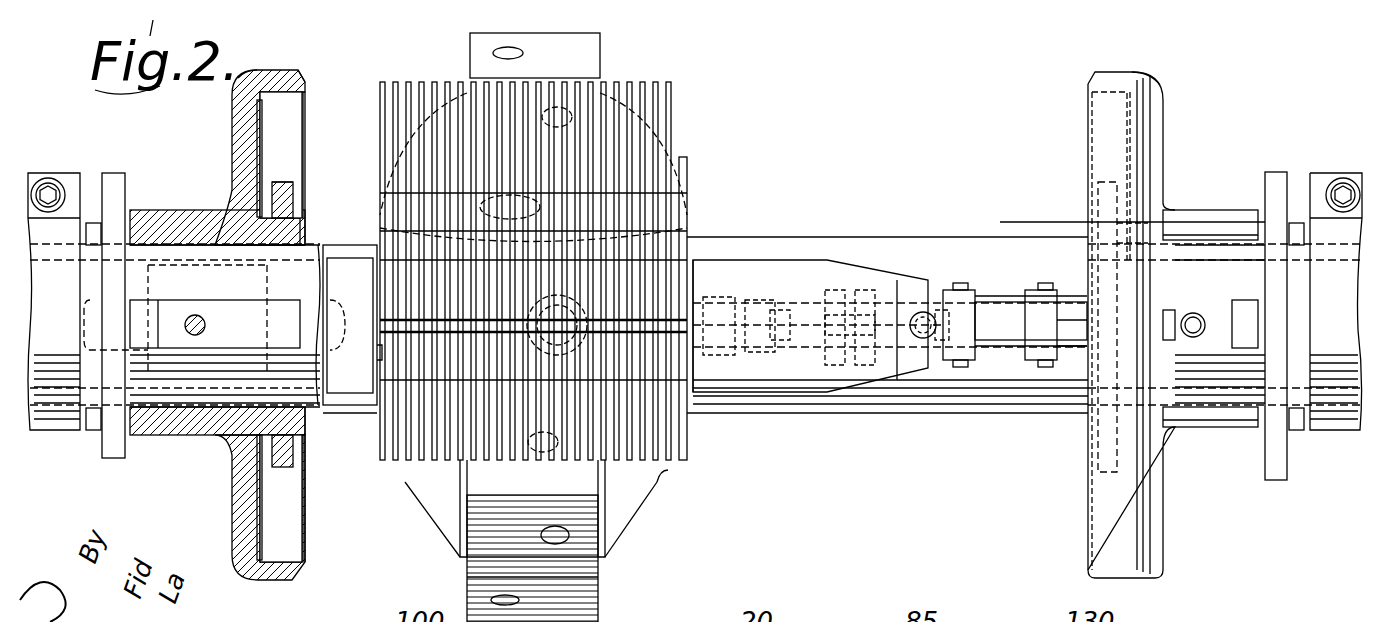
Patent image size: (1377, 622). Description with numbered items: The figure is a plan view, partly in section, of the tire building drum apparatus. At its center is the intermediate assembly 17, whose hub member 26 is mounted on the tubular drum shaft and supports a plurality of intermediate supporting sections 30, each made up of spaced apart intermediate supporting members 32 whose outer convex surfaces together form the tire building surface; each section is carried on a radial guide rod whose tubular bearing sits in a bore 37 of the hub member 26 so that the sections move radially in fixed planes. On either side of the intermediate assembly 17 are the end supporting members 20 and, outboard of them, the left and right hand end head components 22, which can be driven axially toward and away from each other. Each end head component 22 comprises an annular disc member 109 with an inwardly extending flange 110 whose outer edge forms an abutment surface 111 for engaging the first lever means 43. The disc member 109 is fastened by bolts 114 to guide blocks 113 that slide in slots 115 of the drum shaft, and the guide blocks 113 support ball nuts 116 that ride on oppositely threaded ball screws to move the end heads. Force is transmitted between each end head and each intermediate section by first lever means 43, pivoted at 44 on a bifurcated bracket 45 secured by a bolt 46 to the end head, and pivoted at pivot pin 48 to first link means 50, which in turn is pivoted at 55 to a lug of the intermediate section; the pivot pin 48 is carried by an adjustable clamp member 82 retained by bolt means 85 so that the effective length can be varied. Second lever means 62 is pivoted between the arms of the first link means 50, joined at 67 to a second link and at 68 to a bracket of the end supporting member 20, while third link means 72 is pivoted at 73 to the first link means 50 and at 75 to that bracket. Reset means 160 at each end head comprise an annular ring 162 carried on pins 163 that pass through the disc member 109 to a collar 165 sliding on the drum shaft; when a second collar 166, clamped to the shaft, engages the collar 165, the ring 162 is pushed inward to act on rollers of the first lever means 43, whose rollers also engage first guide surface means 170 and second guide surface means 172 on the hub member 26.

The intermediate assembly 17 is at (455, 576).
The end supporting member 20 is at (349, 379).
The end head component 22 is at (250, 580).
The hub member 26 is at (585, 573).
The intermediate supporting section 30 is at (377, 366).
The intermediate supporting member 32 is at (408, 82).
The bore 37 is at (505, 595).
The first lever means 43 is at (1005, 318).
The pivot 44 is at (1046, 283).
The bifurcated bracket 45 is at (1075, 348).
The bolt 46 is at (1170, 308).
The pivot pin 48 is at (958, 283).
The first link means 50 is at (986, 298).
The pivot 55 is at (696, 262).
The second lever means 62 is at (756, 356).
The pivot 67 is at (722, 356).
The pivot 68 is at (782, 300).
The third link means 72 is at (850, 366).
The pivot 73 is at (842, 290).
The pivot 75 is at (872, 290).
The clamp member 82 is at (940, 356).
The bolt means 85 is at (925, 312).
The annular disc member 109 is at (262, 130).
The flange 110 is at (270, 72).
The abutment surface 111 is at (306, 82).
The guide block 113 is at (190, 296).
The bolt 114 is at (206, 327).
The slot 115 is at (300, 302).
The ball nut 116 is at (283, 233).
The reset means 160 is at (298, 186).
The annular ring 162 is at (293, 197).
The pin 163 is at (180, 230).
The collar 165 is at (113, 178).
The second collar 166 is at (55, 173).
The first guide surface means 170 is at (660, 450).
The second guide surface means 172 is at (632, 506).